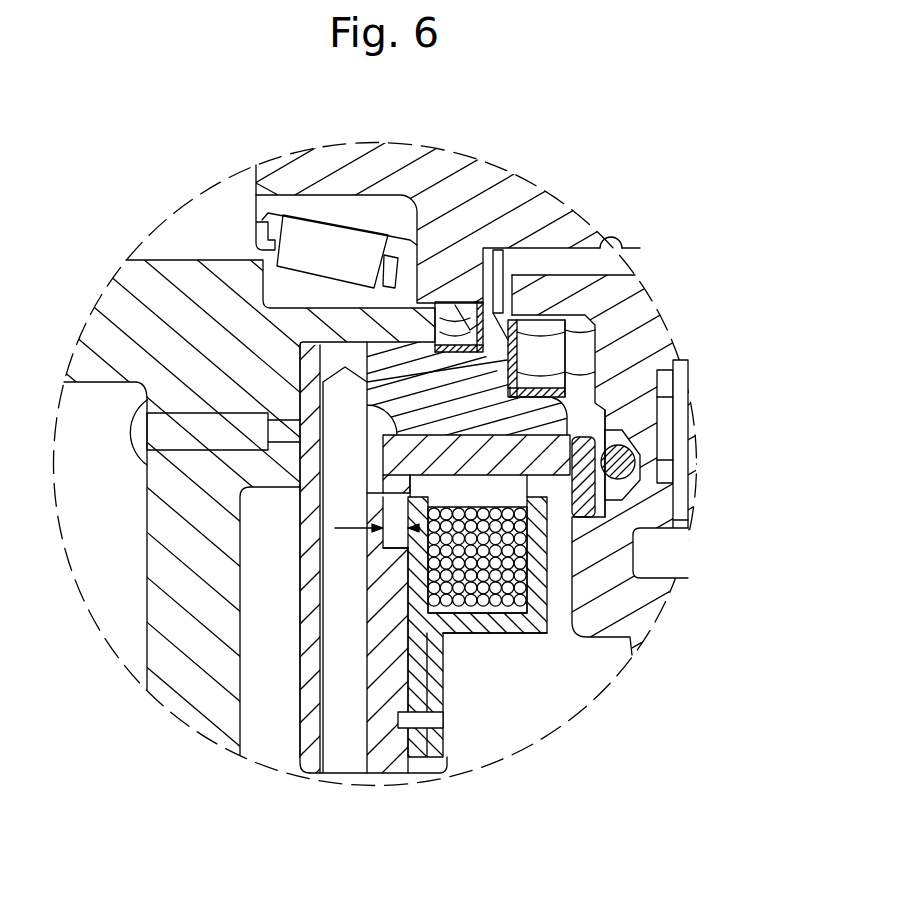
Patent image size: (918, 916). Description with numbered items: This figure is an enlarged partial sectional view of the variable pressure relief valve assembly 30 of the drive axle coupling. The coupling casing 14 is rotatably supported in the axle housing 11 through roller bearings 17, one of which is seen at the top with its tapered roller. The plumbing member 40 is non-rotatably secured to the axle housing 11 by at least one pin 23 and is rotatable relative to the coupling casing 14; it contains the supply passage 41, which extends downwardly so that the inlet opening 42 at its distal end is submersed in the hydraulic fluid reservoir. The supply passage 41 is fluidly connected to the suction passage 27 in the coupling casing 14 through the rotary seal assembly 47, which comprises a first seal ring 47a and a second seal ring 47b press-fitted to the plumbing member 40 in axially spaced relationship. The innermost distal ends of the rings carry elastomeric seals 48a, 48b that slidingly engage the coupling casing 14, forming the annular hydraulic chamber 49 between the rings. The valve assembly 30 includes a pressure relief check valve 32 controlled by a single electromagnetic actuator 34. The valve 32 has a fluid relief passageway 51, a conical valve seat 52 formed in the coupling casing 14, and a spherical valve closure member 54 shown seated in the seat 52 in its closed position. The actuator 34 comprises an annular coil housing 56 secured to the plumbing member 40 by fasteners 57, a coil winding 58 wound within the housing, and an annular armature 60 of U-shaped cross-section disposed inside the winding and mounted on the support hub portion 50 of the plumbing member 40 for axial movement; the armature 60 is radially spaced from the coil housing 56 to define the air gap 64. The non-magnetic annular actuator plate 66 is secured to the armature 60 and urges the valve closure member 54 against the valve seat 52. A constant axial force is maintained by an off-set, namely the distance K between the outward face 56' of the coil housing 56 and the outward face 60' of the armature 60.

The axle housing 11 is at (170, 573).
The coupling casing 14 is at (345, 150).
The roller bearings 17 is at (240, 237).
The pin 23 is at (163, 430).
The suction passage 27 is at (610, 262).
The variable pressure relief valve assembly 30 is at (592, 730).
The pressure relief check valve 32 is at (620, 507).
The electromagnetic actuator 34 is at (472, 646).
The plumbing member 40 is at (285, 720).
The supply passage 41 is at (317, 572).
The inlet opening 42 is at (347, 760).
The rotary seal assembly 47 is at (595, 322).
The first seal ring 47a is at (435, 325).
The second seal ring 47b is at (560, 357).
The elastomeric seal 48a is at (407, 268).
The elastomeric seal 48b is at (607, 300).
The hydraulic chamber 49 is at (497, 310).
The support hub portion 50 is at (367, 412).
The fluid relief passageway 51 is at (650, 463).
The valve seat 52 is at (657, 413).
The valve closure member 54 is at (620, 467).
The coil housing 56 is at (477, 628).
The outward face of the coil housing 56' is at (369, 634).
The fasteners 57 is at (447, 707).
The coil winding 58 is at (540, 600).
The armature 60 is at (449, 464).
The outward face of the armature 60' is at (369, 489).
The air gap 64 is at (527, 497).
The actuator plate 66 is at (587, 507).
The off-set distance K is at (377, 522).